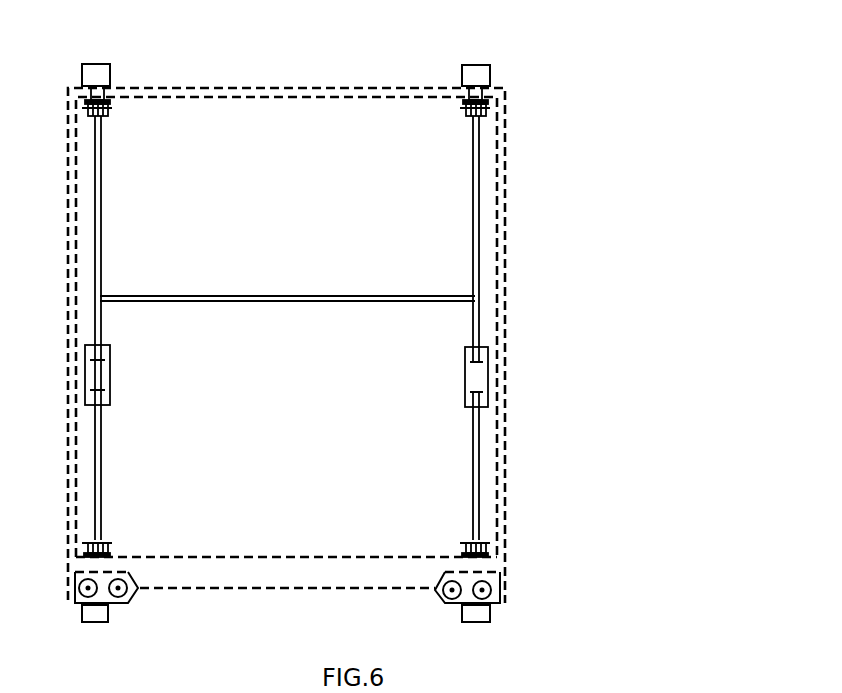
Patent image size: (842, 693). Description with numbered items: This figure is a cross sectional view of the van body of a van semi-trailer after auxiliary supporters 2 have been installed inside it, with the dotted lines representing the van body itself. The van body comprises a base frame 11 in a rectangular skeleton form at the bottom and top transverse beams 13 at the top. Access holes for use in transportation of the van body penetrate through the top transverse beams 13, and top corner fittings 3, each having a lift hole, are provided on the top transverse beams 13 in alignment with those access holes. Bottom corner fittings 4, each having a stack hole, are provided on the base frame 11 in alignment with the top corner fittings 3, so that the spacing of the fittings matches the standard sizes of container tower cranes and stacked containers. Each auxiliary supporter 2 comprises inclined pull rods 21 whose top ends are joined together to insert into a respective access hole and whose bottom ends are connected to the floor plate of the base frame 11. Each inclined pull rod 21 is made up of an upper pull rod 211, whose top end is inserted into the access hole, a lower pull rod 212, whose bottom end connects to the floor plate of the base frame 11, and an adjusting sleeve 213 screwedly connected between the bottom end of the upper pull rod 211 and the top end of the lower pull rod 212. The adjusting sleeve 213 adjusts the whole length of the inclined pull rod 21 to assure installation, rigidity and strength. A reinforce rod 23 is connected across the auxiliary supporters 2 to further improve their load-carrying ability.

The auxiliary supporter 2 is at (685, 225).
The top corner fitting 3 is at (485, 72).
The bottom corner fitting 4 is at (480, 610).
The base frame 11 is at (289, 570).
The top transverse beam 13 is at (312, 92).
The inclined pull rod 21 is at (618, 285).
The reinforce rod 23 is at (415, 298).
The upper pull rod 211 is at (477, 310).
The lower pull rod 212 is at (478, 495).
The adjusting sleeve 213 is at (489, 373).